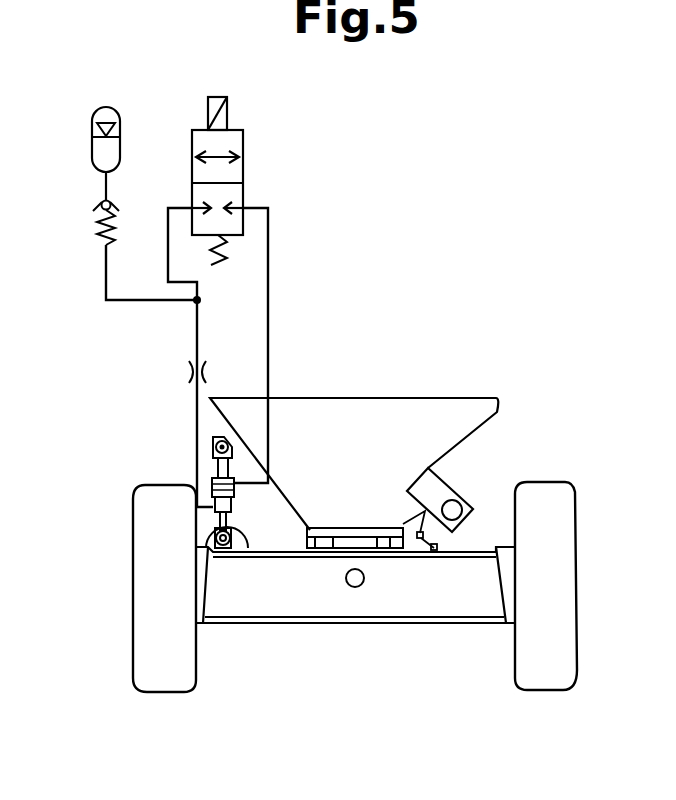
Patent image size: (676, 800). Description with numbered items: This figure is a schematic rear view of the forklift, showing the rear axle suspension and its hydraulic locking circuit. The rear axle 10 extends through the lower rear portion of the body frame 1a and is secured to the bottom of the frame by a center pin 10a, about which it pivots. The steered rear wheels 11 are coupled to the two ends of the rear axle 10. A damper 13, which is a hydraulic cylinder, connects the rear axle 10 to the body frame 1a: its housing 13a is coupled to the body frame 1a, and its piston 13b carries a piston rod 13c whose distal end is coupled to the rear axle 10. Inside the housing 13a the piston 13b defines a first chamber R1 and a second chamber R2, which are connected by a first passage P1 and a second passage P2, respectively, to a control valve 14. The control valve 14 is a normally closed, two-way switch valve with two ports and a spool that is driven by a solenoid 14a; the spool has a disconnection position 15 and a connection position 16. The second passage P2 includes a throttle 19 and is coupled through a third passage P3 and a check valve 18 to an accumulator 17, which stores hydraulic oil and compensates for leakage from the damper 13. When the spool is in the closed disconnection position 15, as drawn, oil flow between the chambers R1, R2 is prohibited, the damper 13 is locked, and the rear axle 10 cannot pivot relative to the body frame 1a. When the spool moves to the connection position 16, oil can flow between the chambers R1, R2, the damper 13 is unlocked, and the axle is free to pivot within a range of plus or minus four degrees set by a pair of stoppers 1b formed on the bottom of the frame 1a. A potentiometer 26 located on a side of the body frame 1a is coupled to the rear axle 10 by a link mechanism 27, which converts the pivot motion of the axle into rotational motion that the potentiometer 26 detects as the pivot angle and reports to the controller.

The body frame 1a is at (475, 428).
The stoppers 1b is at (314, 548).
The rear axle 10 is at (458, 612).
The center pin 10a is at (356, 588).
The rear wheels 11 is at (133, 670).
The damper 13 is at (235, 477).
The housing 13a is at (234, 505).
The piston 13b is at (235, 490).
The piston rod 13c is at (246, 548).
The control valve 14 is at (243, 130).
The solenoid 14a is at (214, 97).
The disconnection position 15 is at (192, 195).
The connection position 16 is at (243, 163).
The accumulator 17 is at (92, 128).
The check valve 18 is at (92, 210).
The throttle 19 is at (188, 373).
The potentiometer 26 is at (452, 510).
The link mechanism 27 is at (387, 508).
The first passage P1 is at (268, 352).
The second passage P2 is at (197, 413).
The third passage P3 is at (122, 300).
The first chamber R1 is at (212, 485).
The second chamber R2 is at (215, 510).